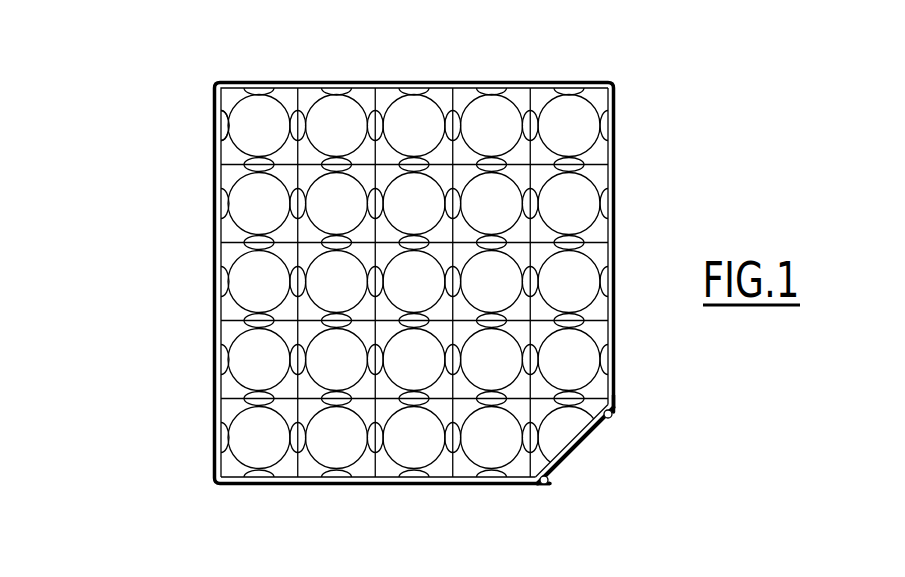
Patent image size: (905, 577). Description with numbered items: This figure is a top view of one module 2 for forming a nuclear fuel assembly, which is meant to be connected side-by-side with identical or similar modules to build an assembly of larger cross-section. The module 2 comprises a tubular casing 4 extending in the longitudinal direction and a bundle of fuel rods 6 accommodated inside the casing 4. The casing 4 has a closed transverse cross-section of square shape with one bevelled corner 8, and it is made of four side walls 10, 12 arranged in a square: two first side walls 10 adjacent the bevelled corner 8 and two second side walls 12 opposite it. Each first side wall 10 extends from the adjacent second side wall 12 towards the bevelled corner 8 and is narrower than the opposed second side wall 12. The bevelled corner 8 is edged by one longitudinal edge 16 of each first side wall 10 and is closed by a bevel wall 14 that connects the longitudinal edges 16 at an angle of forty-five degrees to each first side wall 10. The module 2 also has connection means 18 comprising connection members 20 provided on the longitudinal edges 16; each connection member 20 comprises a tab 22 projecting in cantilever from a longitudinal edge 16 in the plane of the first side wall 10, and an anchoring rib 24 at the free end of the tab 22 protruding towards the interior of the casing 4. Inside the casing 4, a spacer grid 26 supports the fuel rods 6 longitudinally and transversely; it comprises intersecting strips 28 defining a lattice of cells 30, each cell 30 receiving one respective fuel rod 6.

The module 2 is at (137, 171).
The tubular casing 4 is at (212, 309).
The fuel rods 6 is at (260, 370).
The bevelled corner 8 is at (593, 463).
The first side walls 10 is at (614, 182).
The second side walls 12 is at (288, 82).
The bevel wall 14 is at (556, 464).
The longitudinal edge 16 is at (617, 388).
The connection means 18 is at (684, 479).
The connection member 20 is at (703, 437).
The tab 22 is at (614, 407).
The anchoring rib 24 is at (612, 420).
The spacer grid 26 is at (227, 155).
The intersecting strips 28 is at (467, 152).
The cells 30 is at (366, 98).